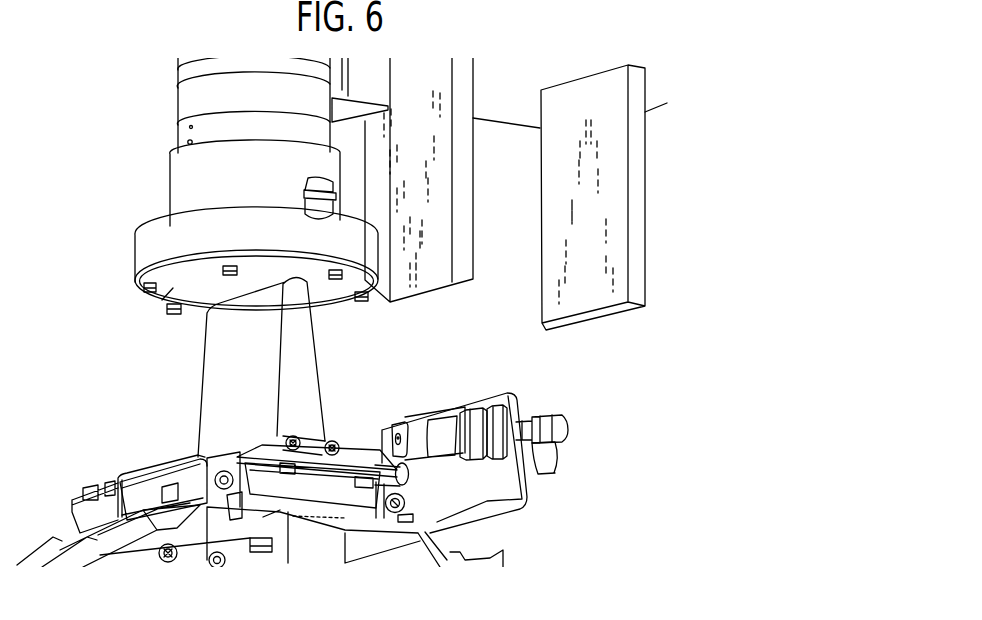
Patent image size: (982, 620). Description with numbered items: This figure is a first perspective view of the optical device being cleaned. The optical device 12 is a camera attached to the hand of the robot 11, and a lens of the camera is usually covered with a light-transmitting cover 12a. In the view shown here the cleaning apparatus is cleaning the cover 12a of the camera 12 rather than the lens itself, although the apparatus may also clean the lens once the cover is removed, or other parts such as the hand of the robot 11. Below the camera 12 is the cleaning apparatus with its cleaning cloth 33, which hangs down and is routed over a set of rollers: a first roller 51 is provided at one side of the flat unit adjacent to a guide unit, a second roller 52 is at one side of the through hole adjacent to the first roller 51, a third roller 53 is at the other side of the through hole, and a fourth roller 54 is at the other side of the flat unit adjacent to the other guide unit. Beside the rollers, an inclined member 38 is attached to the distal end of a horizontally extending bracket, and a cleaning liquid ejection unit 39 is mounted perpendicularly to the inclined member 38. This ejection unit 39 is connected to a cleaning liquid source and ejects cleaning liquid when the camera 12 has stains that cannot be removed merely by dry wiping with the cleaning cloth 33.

The robot 11 is at (498, 136).
The optical device 12 is at (189, 179).
The light-transmitting cover 12a is at (197, 307).
The cleaning cloth 33 is at (225, 372).
The inclined member 38 is at (505, 473).
The cleaning liquid ejection unit 39 is at (447, 418).
The first roller 51 is at (410, 503).
The second roller 52 is at (338, 444).
The third roller 53 is at (296, 438).
The fourth roller 54 is at (193, 483).